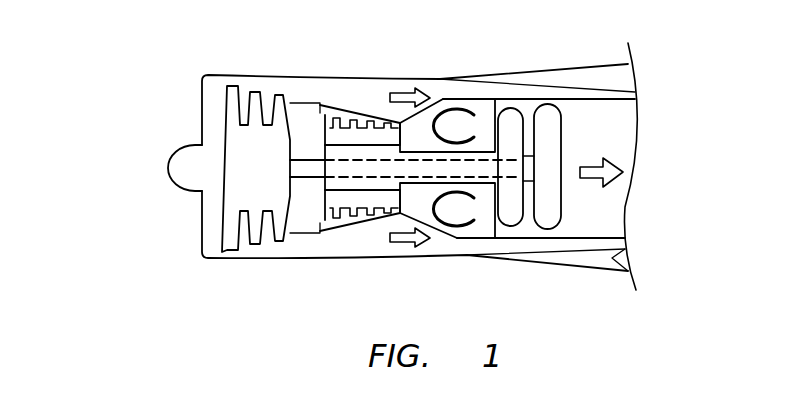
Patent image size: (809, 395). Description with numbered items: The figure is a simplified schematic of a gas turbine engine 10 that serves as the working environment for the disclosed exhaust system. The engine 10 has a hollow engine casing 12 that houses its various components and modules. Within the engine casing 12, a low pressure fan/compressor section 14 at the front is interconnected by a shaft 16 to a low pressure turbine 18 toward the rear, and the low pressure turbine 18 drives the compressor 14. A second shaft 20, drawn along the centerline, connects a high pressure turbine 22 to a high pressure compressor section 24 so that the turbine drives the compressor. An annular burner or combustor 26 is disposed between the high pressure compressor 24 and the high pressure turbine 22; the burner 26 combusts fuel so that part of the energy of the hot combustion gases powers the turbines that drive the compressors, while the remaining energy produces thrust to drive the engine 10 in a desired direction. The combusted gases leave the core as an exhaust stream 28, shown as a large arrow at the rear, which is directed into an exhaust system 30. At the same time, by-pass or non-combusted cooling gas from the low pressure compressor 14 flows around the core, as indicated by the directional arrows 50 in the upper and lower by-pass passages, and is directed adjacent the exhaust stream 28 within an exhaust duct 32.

The gas turbine engine 10 is at (695, 75).
The engine casing 12 is at (600, 268).
The low pressure fan/compressor section 14 is at (220, 105).
The shaft 16 is at (312, 178).
The low pressure turbine 18 is at (547, 104).
The second shaft 20 is at (490, 178).
The high pressure turbine 22 is at (505, 108).
The high pressure compressor section 24 is at (333, 117).
The burner or combustor 26 is at (455, 110).
The exhaust stream 28 is at (612, 160).
The exhaust system 30 is at (612, 258).
The exhaust duct 32 is at (603, 90).
The directional arrows 50 is at (399, 90).